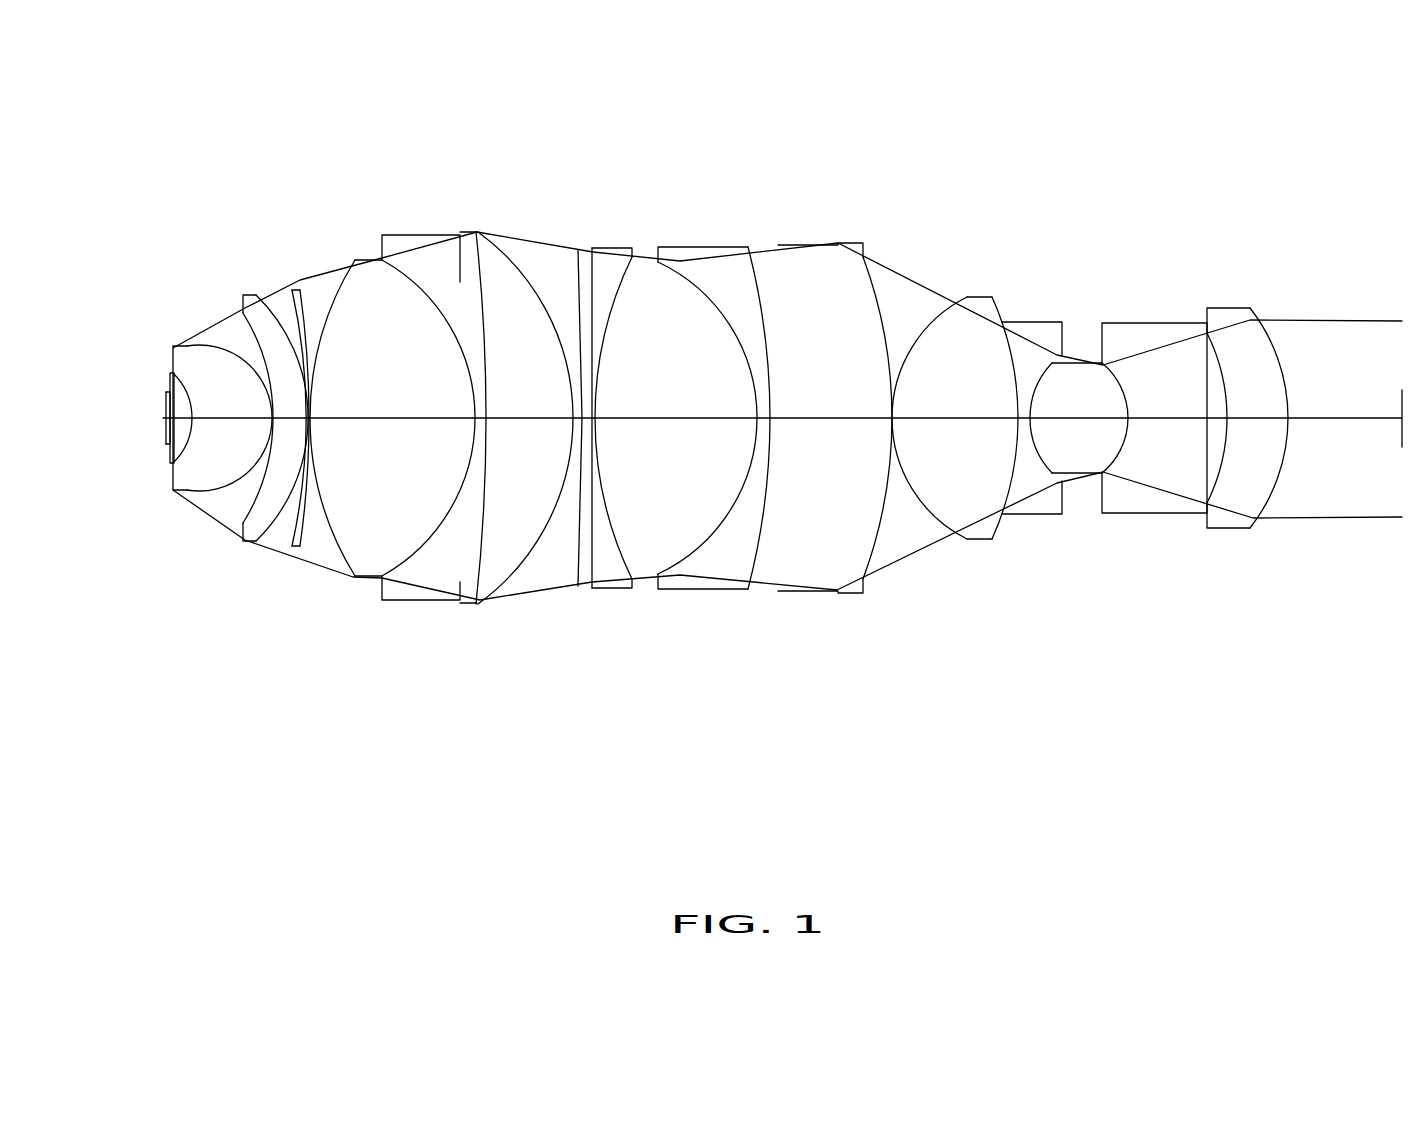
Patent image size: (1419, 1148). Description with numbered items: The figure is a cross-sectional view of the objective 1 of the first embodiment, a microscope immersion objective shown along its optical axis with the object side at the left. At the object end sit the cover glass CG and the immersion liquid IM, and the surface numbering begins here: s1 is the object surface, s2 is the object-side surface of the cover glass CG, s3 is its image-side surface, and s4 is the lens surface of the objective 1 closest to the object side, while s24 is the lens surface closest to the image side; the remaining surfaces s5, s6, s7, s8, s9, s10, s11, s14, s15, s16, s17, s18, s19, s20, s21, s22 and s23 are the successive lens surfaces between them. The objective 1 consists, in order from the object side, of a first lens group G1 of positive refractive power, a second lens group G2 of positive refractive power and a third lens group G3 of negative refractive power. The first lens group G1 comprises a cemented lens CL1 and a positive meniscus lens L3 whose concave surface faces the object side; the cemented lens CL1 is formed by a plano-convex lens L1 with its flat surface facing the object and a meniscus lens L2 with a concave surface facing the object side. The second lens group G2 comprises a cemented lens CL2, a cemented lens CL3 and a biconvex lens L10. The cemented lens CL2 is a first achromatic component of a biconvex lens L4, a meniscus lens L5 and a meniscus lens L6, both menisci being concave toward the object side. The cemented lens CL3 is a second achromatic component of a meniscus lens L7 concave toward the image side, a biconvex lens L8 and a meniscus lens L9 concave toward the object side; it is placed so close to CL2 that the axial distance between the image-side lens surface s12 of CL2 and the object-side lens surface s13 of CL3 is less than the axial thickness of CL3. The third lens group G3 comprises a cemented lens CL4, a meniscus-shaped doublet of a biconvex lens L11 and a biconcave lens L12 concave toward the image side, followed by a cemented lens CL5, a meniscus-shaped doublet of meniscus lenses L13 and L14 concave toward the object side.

The objective 1 is at (1275, 126).
The cover glass CG is at (162, 447).
The immersion liquid IM is at (173, 463).
The object surface s1 is at (167, 392).
The object-side surface of cover glass s2 is at (151, 354).
The image-side surface of cover glass s3 is at (173, 385).
The lens surface closest to object side s4 is at (185, 345).
The lens surface s5 is at (243, 320).
The lens surface s6 is at (250, 300).
The lens surface s7 is at (290, 292).
The lens surface s8 is at (300, 292).
The lens surface s9 is at (330, 312).
The lens surface s10 is at (410, 275).
The lens surface s11 is at (467, 275).
The image-side lens surface of cemented lens CL2 s12 is at (545, 320).
The object-side lens surface of cemented lens CL3 s13 is at (585, 313).
The lens surface s14 is at (580, 305).
The lens surface s15 is at (628, 288).
The lens surface s16 is at (760, 283).
The lens surface s17 is at (802, 298).
The lens surface s18 is at (878, 287).
The lens surface s19 is at (925, 300).
The lens surface s20 is at (975, 297).
The lens surface s21 is at (1053, 357).
The lens surface s22 is at (1100, 355).
The lens surface s23 is at (1210, 350).
The lens surface closest to image side s24 is at (1278, 312).
The plano-convex lens L1 is at (220, 440).
The meniscus lens L2 is at (277, 483).
The meniscus lens L3 is at (290, 487).
The biconvex lens L4 is at (367, 483).
The meniscus lens L5 is at (440, 553).
The meniscus lens L6 is at (500, 550).
The meniscus lens L7 is at (623, 562).
The biconvex lens L8 is at (657, 520).
The meniscus lens L9 is at (710, 560).
The biconvex lens L10 is at (855, 543).
The biconvex lens L11 is at (967, 520).
The biconcave lens L12 is at (1040, 515).
The meniscus lens L13 is at (1148, 513).
The meniscus lens L14 is at (1245, 528).
The cemented lens CL1 is at (268, 642).
The cemented lens CL2 is at (500, 642).
The cemented lens CL3 is at (715, 645).
The cemented lens CL4 is at (1080, 643).
The cemented lens CL5 is at (1267, 643).
The first lens group G1 is at (302, 682).
The second lens group G2 is at (893, 682).
The third lens group G3 is at (1297, 682).